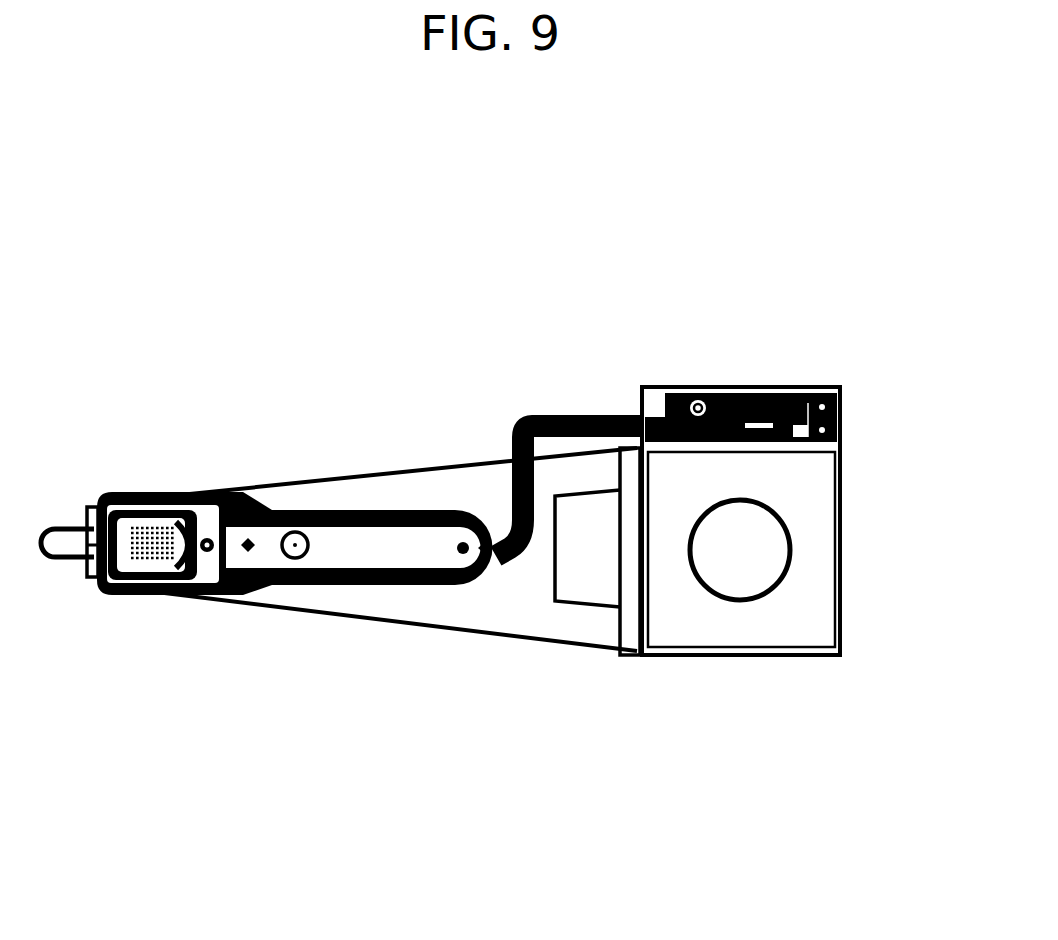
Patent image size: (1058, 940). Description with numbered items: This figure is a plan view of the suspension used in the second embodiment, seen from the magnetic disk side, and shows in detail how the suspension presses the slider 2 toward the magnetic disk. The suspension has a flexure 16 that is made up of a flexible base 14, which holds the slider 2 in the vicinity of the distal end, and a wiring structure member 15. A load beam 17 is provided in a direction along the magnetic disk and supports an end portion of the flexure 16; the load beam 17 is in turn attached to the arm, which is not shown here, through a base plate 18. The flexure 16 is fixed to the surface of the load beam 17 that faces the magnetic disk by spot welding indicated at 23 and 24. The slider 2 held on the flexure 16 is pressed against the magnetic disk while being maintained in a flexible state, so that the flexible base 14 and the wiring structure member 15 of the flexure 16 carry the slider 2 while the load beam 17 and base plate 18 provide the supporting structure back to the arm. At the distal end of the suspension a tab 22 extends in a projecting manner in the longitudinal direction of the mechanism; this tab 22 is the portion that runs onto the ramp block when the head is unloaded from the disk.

The slider 2 is at (172, 510).
The flexible base 14 is at (103, 592).
The wiring structure member 15 is at (578, 413).
The flexure 16 is at (400, 543).
The load beam 17 is at (525, 608).
The base plate 18 is at (768, 613).
The tab 22 is at (62, 535).
The spot welding 23 is at (249, 552).
The spot welding 24 is at (461, 556).